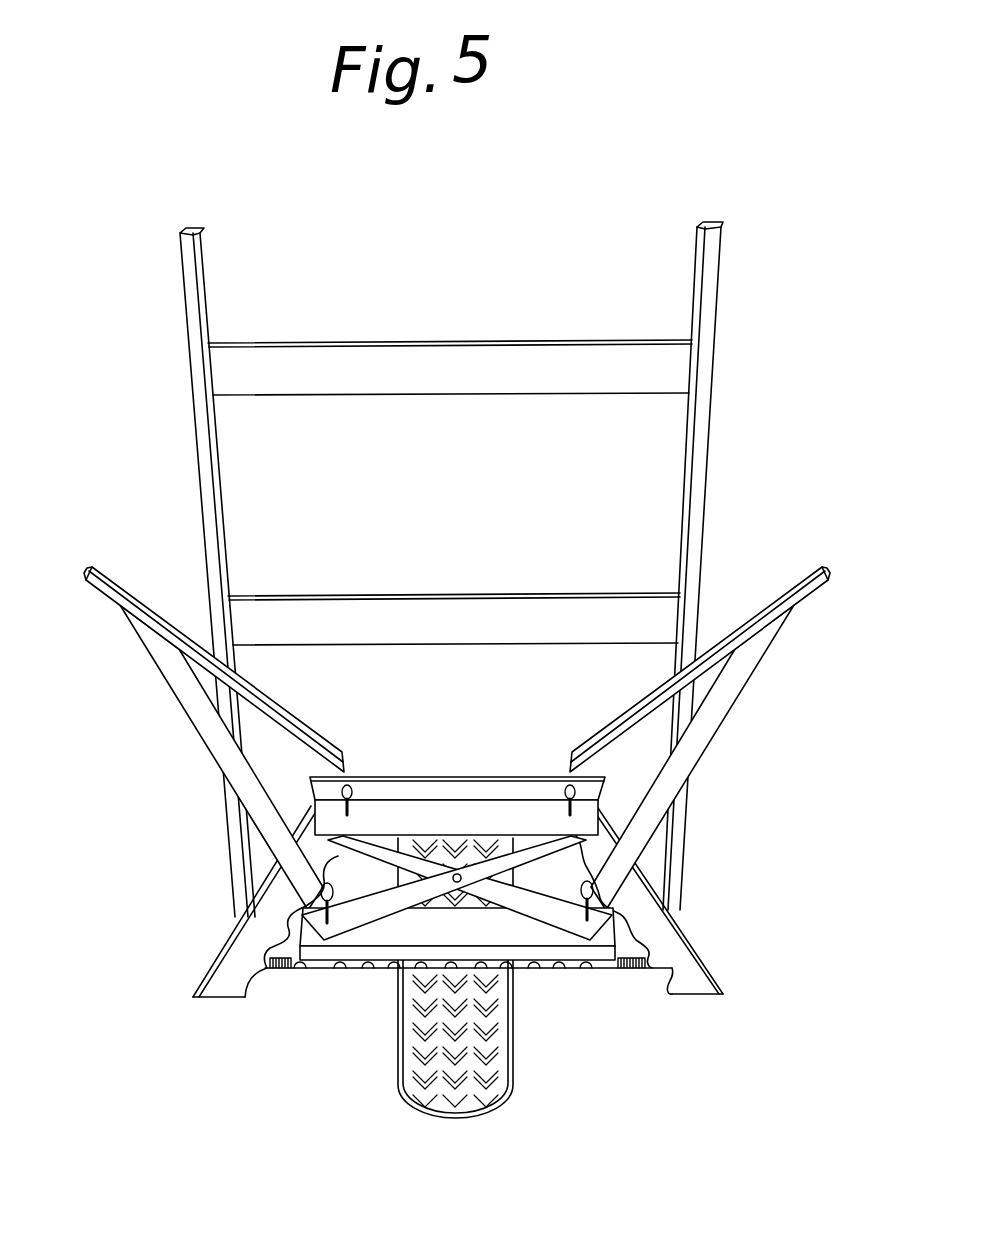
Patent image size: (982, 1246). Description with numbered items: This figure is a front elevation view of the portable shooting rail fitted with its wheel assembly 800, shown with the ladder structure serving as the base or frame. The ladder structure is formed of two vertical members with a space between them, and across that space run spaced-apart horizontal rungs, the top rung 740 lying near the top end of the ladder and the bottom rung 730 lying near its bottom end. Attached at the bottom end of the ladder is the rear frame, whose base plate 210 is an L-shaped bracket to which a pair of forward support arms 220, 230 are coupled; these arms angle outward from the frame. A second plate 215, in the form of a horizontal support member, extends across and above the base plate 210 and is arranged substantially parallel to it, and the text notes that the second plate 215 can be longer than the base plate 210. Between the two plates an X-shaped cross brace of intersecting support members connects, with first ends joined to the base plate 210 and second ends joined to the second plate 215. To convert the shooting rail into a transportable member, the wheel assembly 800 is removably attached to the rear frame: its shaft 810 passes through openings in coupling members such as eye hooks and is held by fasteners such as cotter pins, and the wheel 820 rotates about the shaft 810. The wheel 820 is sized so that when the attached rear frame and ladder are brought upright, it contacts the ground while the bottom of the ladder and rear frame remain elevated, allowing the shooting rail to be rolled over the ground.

The top rung 740 is at (376, 366).
The bottom rung 730 is at (280, 611).
The forward support arm 230 is at (110, 598).
The forward support arm 220 is at (812, 582).
The base plate 210 is at (383, 793).
The second plate 215 is at (398, 930).
The wheel assembly 800 is at (530, 1048).
The shaft 810 is at (627, 973).
The wheel 820 is at (408, 1052).